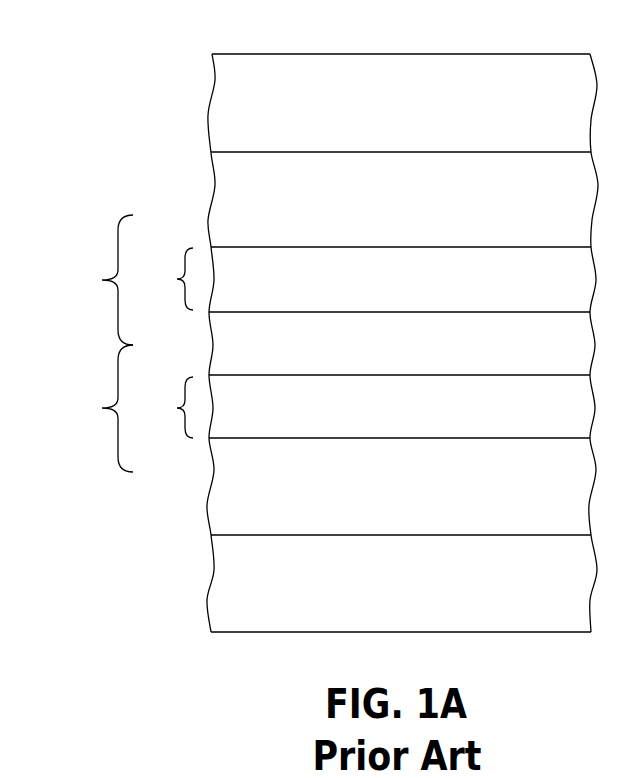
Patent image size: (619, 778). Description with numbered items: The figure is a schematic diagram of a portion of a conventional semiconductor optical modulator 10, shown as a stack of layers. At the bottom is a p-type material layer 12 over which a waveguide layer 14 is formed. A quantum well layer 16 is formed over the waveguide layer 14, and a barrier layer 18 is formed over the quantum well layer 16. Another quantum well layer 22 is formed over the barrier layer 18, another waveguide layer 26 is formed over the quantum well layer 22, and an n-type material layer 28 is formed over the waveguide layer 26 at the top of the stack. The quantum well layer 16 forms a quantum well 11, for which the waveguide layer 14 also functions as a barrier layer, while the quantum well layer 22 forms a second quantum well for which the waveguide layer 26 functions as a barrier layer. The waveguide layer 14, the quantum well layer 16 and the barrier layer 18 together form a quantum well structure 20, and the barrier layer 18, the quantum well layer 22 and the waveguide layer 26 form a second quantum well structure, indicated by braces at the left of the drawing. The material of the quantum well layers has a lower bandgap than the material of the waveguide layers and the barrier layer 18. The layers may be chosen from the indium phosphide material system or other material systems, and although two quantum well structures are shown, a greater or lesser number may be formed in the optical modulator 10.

The semiconductor optical modulator 10 is at (152, 38).
The p-type material layer 12 is at (256, 626).
The waveguide layer 14 is at (246, 528).
The quantum well layer 16 is at (251, 431).
The barrier layer 18 is at (249, 370).
The quantum well layer 22 is at (249, 305).
The waveguide layer 26 is at (246, 235).
The n-type material layer 28 is at (247, 136).
The quantum well structure 20 is at (99, 408).
The quantum well 11 is at (168, 407).